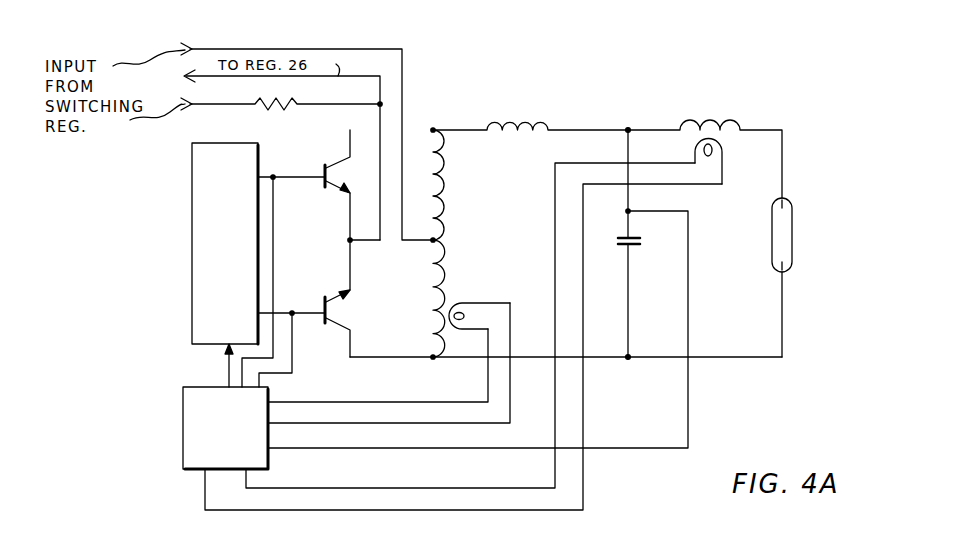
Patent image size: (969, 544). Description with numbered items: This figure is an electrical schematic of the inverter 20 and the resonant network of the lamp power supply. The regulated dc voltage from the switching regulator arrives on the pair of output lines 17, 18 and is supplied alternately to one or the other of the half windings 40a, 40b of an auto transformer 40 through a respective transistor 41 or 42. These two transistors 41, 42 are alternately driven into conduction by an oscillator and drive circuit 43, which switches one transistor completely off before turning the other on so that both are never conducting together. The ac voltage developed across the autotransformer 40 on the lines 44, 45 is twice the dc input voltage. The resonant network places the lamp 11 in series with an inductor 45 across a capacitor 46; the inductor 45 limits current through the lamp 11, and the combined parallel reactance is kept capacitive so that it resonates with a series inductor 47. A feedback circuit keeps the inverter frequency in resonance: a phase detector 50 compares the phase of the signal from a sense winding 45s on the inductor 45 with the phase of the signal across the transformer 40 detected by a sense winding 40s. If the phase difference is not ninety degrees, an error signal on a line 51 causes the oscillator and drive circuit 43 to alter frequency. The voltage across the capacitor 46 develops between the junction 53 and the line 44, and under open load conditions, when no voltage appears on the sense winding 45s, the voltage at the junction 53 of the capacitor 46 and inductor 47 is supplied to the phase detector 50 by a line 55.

The lamp 11 is at (792, 250).
The output line 17 is at (232, 46).
The output line 18 is at (232, 106).
The inverter 20 is at (398, 484).
The auto transformer 40 is at (437, 243).
The half winding 40a is at (432, 302).
The half winding 40b is at (440, 195).
The sense winding 40s is at (467, 309).
The transistor 41 is at (324, 308).
The transistor 42 is at (322, 170).
The oscillator and drive circuit 43 is at (192, 222).
The line 44 is at (415, 357).
The inductor 45 is at (722, 118).
The sense winding 45s is at (483, 325).
The capacitor 46 is at (644, 240).
The series inductor 47 is at (529, 118).
The phase detector 50 is at (183, 428).
The line 51 is at (218, 373).
The junction 53 is at (628, 125).
The line 55 is at (690, 391).